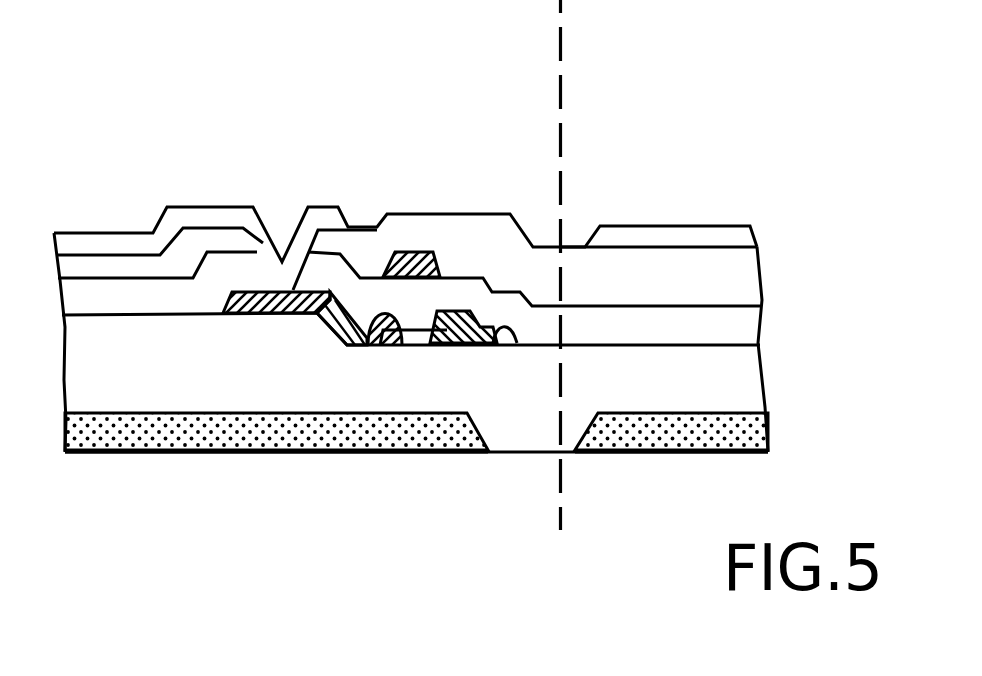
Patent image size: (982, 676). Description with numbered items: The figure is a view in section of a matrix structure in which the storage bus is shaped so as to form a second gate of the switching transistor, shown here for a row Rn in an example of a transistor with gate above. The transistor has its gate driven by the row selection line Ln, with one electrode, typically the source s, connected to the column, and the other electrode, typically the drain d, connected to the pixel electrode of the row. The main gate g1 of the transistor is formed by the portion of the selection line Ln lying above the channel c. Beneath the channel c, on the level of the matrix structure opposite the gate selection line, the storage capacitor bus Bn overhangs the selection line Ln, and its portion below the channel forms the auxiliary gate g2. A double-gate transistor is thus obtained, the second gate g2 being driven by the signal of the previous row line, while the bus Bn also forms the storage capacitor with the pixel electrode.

The row Rn is at (255, 51).
The row selection line Ln is at (415, 256).
The main gate g1 is at (437, 258).
The drain d is at (310, 280).
The channel c is at (407, 337).
The source s is at (507, 324).
The auxiliary gate g2 is at (427, 411).
The storage capacitor bus Bn is at (263, 437).